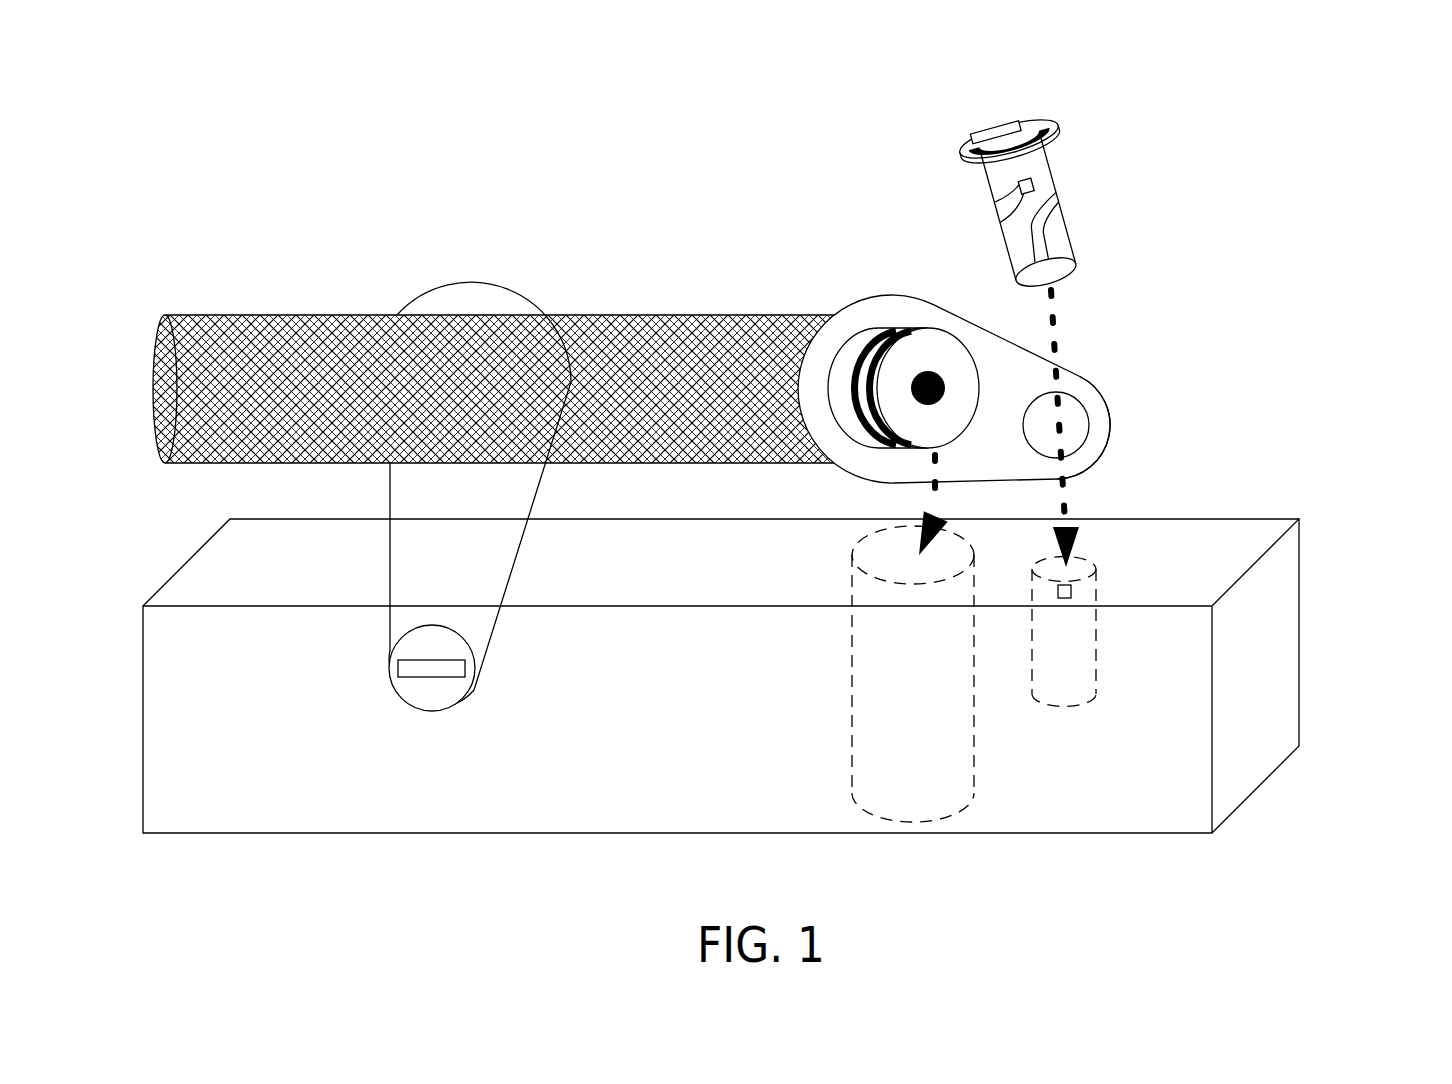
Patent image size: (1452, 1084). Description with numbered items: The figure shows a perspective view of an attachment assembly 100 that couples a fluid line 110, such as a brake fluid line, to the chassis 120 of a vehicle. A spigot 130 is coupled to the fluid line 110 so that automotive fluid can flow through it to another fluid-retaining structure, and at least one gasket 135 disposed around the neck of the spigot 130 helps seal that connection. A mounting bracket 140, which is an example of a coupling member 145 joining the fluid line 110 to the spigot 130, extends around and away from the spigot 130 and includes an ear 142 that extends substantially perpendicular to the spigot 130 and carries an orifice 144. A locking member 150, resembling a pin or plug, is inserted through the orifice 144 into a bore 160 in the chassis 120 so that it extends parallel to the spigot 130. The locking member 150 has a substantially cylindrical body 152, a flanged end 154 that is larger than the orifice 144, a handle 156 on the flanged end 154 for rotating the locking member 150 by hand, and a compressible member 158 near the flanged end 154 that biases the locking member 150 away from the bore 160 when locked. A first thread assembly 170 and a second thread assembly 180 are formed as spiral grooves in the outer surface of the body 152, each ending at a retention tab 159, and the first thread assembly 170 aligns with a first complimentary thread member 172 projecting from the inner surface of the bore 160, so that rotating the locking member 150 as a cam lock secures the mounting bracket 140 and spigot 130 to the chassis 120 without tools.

The attachment assembly 100 is at (1316, 227).
The fluid line 110 is at (670, 315).
The chassis 120 is at (1255, 519).
The spigot 130 is at (915, 357).
The gasket 135 is at (865, 333).
The mounting bracket 140 is at (483, 282).
The ear 142 is at (1105, 400).
The orifice 144 is at (1090, 437).
The coupling member 145 is at (925, 297).
The locking member 150 is at (1192, 149).
The body 152 is at (1145, 273).
The flanged end 154 is at (1038, 120).
The handle 156 is at (993, 123).
The compressible member 158 is at (1053, 140).
The retention tab 159 is at (1022, 182).
The bore 160 is at (1085, 702).
The first thread assembly 170 is at (1040, 233).
The first complimentary thread member 172 is at (1071, 591).
The second thread assembly 180 is at (1000, 203).